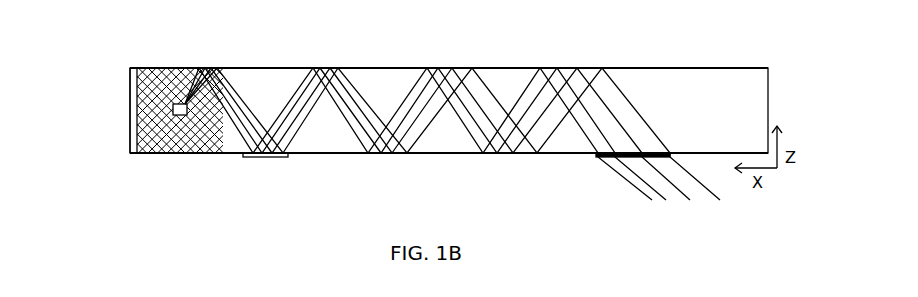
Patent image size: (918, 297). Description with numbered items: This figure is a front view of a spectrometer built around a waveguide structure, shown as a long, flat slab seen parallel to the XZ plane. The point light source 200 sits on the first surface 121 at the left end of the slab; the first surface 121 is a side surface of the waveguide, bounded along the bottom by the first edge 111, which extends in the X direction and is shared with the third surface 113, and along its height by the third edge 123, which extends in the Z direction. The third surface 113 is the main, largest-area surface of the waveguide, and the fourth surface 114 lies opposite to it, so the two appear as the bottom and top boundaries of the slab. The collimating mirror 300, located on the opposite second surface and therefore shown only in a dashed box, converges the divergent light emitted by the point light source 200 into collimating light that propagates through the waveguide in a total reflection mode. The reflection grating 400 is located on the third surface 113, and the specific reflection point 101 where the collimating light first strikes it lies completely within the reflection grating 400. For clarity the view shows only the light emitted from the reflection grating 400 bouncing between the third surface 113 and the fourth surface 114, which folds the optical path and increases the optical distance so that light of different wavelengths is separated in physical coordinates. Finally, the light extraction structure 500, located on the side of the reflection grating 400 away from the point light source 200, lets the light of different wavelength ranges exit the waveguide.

The specific reflection point 101 is at (449, 124).
The first edge 111 is at (449, 171).
The third surface 113 is at (449, 171).
The fourth surface 114 is at (495, 57).
The first surface 121 is at (176, 110).
The third edge 123 is at (100, 114).
The point light source 200 is at (128, 103).
The collimating mirror 300 is at (419, 69).
The reflection grating 400 is at (291, 167).
The light extraction structure 500 is at (599, 167).